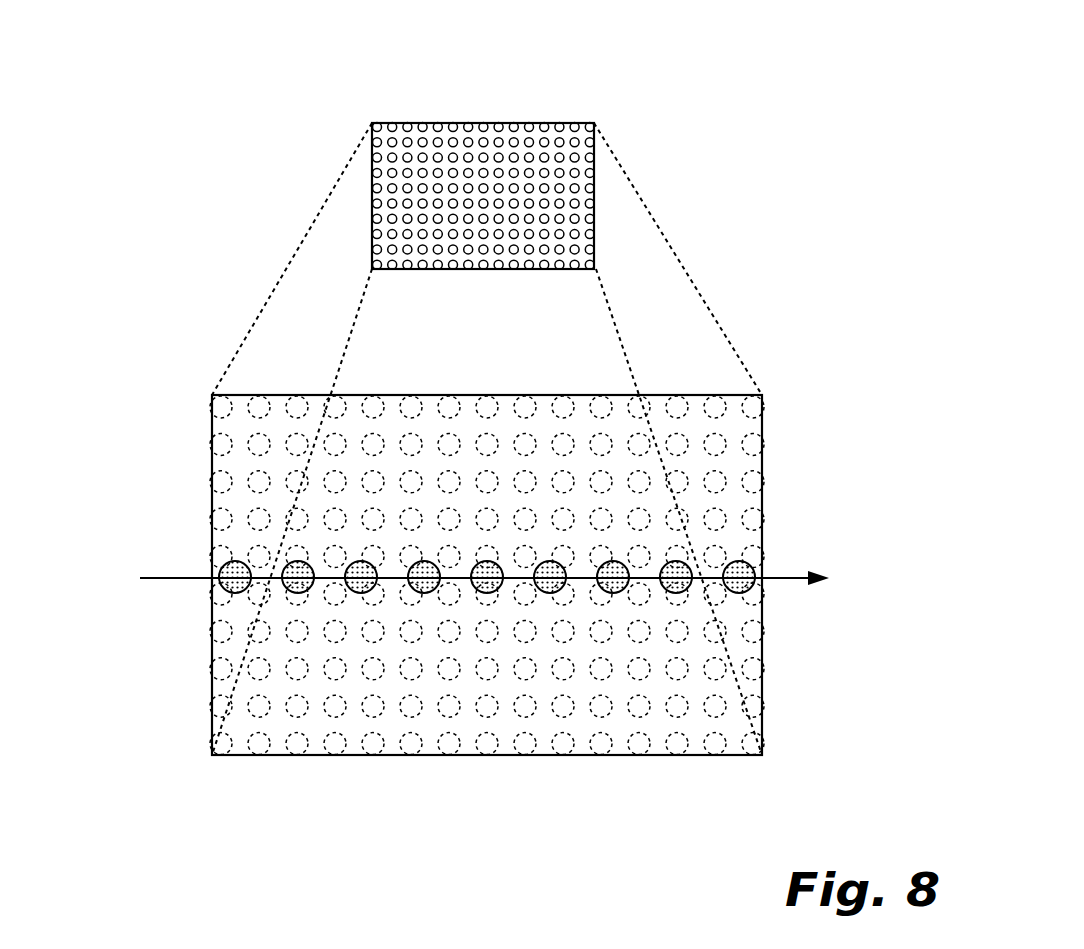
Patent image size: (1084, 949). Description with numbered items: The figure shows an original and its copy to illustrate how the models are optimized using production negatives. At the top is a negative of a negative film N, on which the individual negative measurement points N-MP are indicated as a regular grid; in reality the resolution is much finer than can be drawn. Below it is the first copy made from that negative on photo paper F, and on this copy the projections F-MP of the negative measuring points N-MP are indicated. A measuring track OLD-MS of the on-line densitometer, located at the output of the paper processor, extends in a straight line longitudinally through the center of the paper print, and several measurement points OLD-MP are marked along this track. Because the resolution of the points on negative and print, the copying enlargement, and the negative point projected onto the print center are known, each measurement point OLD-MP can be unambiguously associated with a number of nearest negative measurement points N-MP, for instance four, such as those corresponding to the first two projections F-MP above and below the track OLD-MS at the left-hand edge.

The negative film N is at (468, 102).
The negative measurement points N-MP is at (565, 121).
The photo paper F is at (194, 656).
The projections of the negative measuring points F-MP is at (675, 410).
The measuring track OLD-MS is at (800, 578).
The measurement points OLD-MP is at (748, 590).